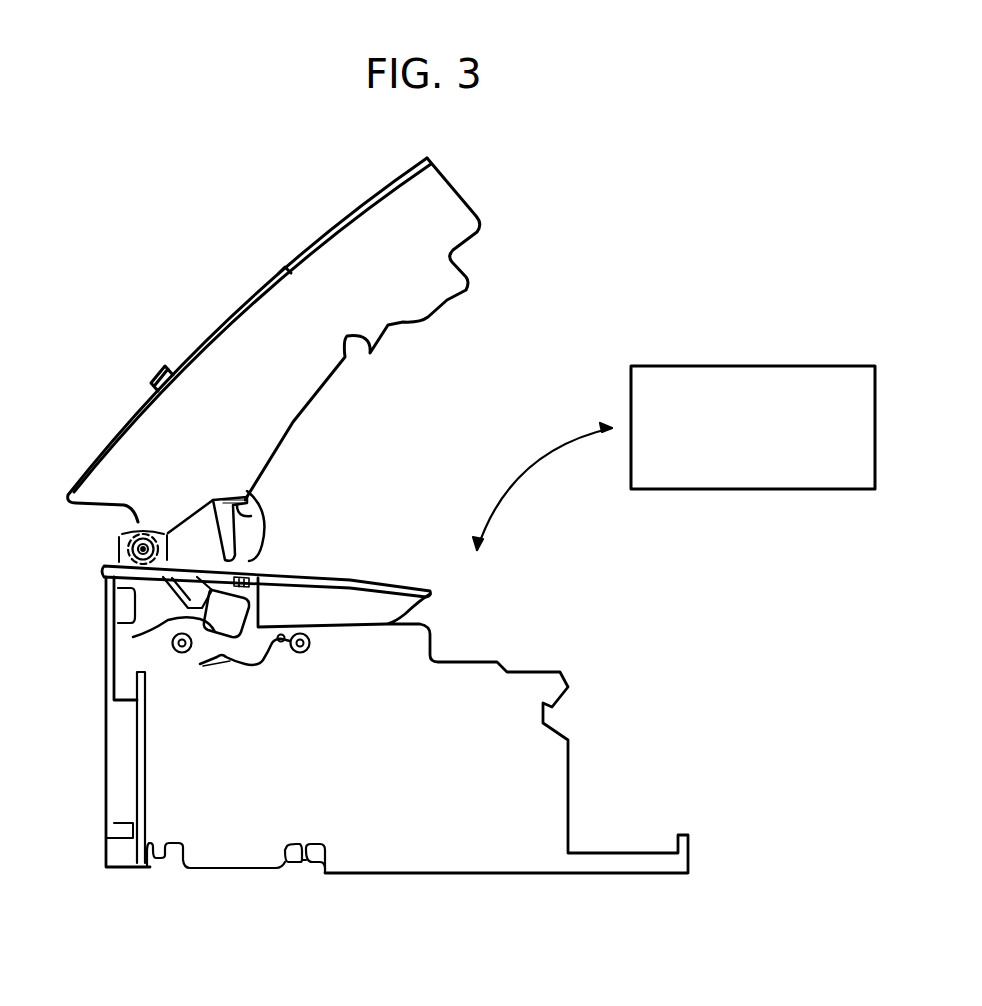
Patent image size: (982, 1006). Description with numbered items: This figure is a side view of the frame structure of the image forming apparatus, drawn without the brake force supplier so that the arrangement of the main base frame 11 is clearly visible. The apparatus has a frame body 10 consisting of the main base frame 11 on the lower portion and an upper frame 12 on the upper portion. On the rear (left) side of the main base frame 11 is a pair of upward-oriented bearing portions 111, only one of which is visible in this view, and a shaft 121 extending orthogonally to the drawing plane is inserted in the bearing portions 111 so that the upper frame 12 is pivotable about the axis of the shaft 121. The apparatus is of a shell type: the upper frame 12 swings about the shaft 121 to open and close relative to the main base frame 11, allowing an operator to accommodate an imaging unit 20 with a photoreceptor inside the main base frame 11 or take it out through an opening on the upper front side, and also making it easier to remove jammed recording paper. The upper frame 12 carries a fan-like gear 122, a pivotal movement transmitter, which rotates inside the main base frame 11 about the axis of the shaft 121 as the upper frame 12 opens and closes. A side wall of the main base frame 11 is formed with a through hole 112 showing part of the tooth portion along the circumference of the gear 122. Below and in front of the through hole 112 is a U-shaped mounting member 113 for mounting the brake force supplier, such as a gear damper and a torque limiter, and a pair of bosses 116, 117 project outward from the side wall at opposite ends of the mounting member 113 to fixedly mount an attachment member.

The frame body 10 is at (364, 423).
The main base frame 11 is at (267, 568).
The upper frame 12 is at (288, 397).
The imaging unit 20 is at (733, 490).
The bearing portion 111 is at (110, 548).
The through hole 112 is at (130, 641).
The mounting member 113 is at (257, 670).
The boss 116 is at (182, 655).
The boss 117 is at (307, 653).
The shaft 121 is at (123, 527).
The fan-like gear 122 is at (247, 500).